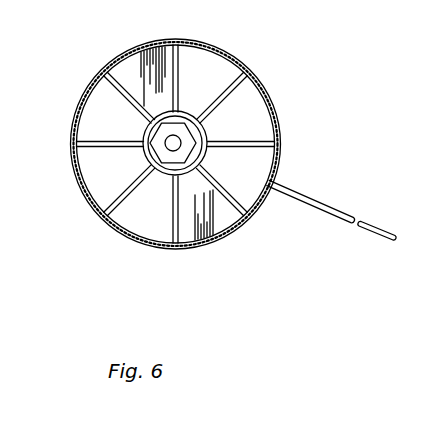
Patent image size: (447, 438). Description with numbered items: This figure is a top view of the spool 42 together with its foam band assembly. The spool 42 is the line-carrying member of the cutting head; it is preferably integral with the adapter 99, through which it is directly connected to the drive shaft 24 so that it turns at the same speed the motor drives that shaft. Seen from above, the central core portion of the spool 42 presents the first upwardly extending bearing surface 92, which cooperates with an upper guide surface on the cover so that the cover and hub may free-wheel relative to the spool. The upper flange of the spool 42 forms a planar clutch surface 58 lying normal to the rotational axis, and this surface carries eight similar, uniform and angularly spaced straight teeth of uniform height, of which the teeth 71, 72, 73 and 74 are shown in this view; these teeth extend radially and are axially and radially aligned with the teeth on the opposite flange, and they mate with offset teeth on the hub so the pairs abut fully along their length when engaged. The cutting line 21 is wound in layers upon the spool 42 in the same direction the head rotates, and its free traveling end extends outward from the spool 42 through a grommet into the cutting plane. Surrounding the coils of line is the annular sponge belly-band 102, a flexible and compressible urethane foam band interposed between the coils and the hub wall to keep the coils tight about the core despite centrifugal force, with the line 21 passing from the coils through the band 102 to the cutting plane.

The cutting line 21 is at (338, 223).
The drive shaft 24 is at (172, 135).
The spool 42 is at (192, 148).
The clutch surface 58 is at (250, 118).
The tooth 71 is at (258, 90).
The tooth 72 is at (170, 228).
The tooth 73 is at (95, 147).
The tooth 74 is at (128, 68).
The first upwardly extending bearing surface 92 is at (158, 173).
The adapter 99 is at (178, 127).
The annular sponge belly-band 102 is at (278, 162).